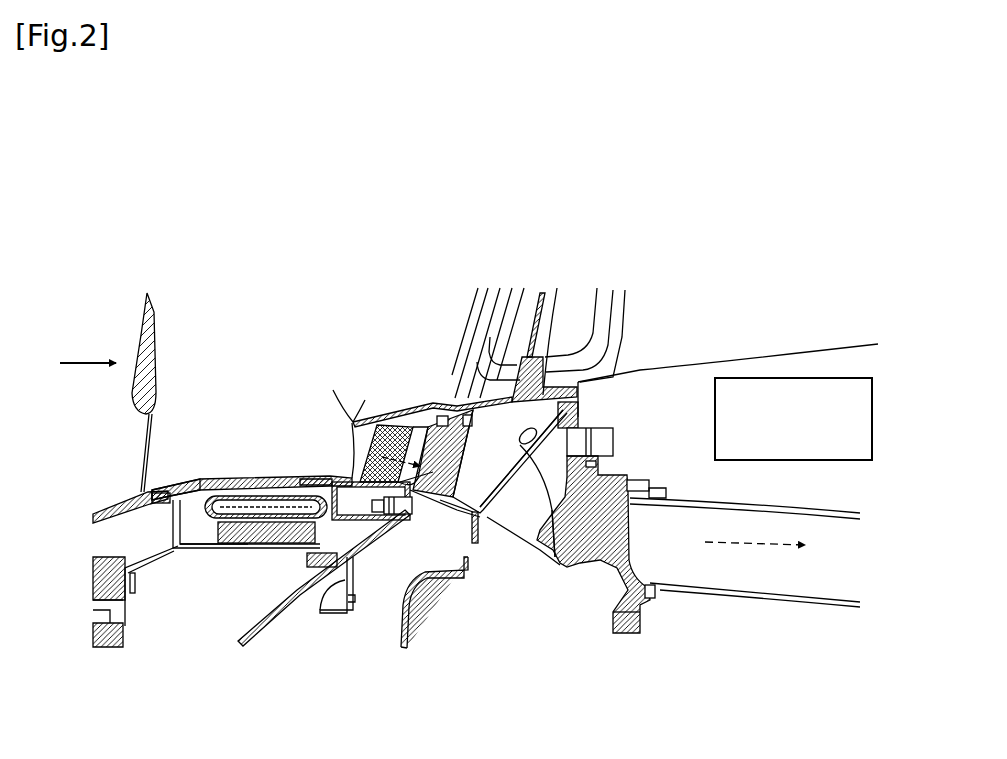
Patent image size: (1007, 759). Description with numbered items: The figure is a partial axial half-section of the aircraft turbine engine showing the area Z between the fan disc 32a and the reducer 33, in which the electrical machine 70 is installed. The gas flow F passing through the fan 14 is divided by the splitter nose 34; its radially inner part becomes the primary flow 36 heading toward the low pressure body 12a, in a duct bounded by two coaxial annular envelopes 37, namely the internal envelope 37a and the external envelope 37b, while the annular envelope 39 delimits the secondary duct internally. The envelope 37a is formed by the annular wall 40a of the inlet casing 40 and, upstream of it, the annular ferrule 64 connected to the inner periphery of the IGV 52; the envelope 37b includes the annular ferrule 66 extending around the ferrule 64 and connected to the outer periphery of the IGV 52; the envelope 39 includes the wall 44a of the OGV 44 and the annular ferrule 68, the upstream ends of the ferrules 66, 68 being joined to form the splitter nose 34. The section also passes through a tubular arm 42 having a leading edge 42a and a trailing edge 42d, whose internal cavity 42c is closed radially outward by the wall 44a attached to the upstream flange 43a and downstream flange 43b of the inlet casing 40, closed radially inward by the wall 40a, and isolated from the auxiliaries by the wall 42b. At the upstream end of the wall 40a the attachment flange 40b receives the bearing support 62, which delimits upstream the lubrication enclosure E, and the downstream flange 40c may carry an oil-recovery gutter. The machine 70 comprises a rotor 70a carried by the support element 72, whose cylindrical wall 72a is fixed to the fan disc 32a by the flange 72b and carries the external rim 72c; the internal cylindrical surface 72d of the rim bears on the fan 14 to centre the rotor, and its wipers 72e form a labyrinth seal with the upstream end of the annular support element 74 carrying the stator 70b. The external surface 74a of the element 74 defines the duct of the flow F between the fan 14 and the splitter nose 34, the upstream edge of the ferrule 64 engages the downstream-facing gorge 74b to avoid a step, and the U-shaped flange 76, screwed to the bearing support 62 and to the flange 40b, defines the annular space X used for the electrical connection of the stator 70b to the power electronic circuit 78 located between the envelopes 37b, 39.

The gas flow F is at (87, 368).
The fan 14 is at (123, 450).
The internal cylindrical surface 72d is at (160, 523).
The external annular wipers 72e is at (165, 492).
The annular support element 74 is at (290, 477).
The external annular surface 74a is at (200, 480).
The annular gorge 74b is at (353, 418).
The electrical machine 70 is at (250, 485).
The stator 70b is at (250, 496).
The rotor 70a is at (268, 545).
The support element 72 is at (171, 609).
The cylindrical wall 72a is at (247, 558).
The radially internal annular attachment flange 72b is at (130, 598).
The external annular rim 72c is at (164, 530).
The fan disc 32a is at (110, 648).
The annular space X is at (382, 496).
The annular splitter nose 34 is at (353, 420).
The annular ferrule 66 is at (350, 420).
The primary flow 36 is at (364, 450).
The annular ferrule 64 is at (352, 478).
The inlet guide vane (IGV) 52 is at (400, 467).
The annular ferrule 68 is at (465, 414).
The inlet casing 40 is at (469, 516).
The annular wall 40a is at (456, 525).
The radially internal annular attachment flange 40b is at (398, 522).
The radially internal annular attachment flange 40c is at (477, 545).
The reducer 33 is at (420, 650).
The annular lubrication enclosure E is at (384, 598).
The bearing support 62 is at (293, 613).
The annular attachment flange 76 is at (357, 520).
The leading edge 42a is at (490, 398).
The upstream annular flange 43a is at (482, 365).
The internal cavity 42c is at (522, 357).
The wall 44a is at (545, 295).
The outlet guide vane (OGV) 44 is at (623, 307).
The downstream annular flange 43b is at (580, 412).
The annular envelope 39 is at (726, 359).
The power electronic circuit 78 is at (870, 418).
The frame block 37 is at (612, 565).
The internal annular envelope 37a is at (615, 632).
The external annular envelope 37b is at (652, 492).
The trailing edge 42d is at (660, 598).
The arm 42 is at (526, 541).
The wall 42b is at (530, 497).
The low pressure body 12a is at (722, 598).